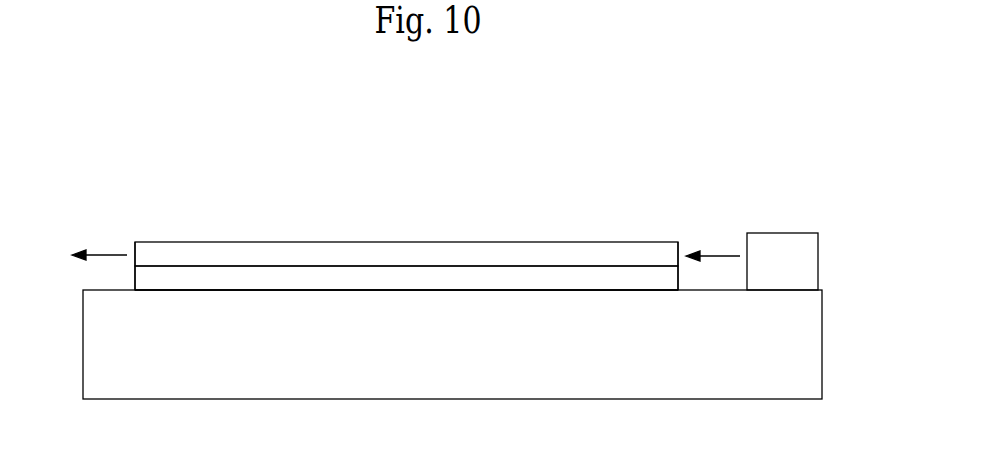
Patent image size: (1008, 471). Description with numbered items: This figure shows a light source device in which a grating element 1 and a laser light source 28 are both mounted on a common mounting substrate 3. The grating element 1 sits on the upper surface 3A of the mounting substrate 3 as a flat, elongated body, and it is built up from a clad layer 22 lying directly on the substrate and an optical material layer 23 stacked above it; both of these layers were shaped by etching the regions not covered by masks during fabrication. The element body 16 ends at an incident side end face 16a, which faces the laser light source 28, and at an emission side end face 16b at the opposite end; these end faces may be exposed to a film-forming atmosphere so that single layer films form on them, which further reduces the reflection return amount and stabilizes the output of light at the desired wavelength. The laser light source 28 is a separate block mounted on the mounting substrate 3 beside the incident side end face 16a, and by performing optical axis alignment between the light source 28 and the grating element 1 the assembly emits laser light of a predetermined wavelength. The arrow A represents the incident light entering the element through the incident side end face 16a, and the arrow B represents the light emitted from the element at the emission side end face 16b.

The grating element 1 is at (416, 298).
The mounting substrate 3 is at (803, 354).
The top surface of substrate 3A is at (600, 286).
The piezoelectric layer body 16 is at (406, 323).
The incident side end face 16a is at (677, 257).
The emission side end face 16b is at (133, 258).
The clad layer 22 is at (435, 278).
The optical material layer 23 is at (457, 257).
The laser light source 28 is at (783, 250).
The arrow A is at (715, 255).
The arrow B is at (100, 254).